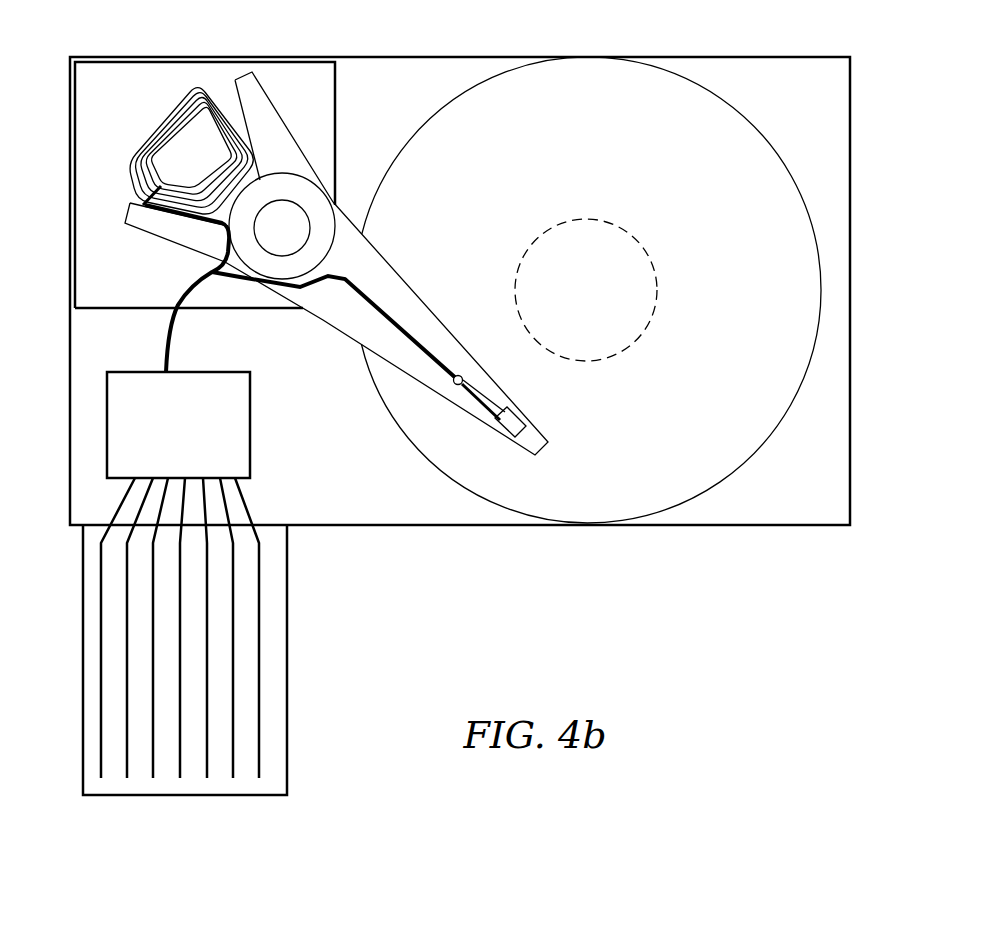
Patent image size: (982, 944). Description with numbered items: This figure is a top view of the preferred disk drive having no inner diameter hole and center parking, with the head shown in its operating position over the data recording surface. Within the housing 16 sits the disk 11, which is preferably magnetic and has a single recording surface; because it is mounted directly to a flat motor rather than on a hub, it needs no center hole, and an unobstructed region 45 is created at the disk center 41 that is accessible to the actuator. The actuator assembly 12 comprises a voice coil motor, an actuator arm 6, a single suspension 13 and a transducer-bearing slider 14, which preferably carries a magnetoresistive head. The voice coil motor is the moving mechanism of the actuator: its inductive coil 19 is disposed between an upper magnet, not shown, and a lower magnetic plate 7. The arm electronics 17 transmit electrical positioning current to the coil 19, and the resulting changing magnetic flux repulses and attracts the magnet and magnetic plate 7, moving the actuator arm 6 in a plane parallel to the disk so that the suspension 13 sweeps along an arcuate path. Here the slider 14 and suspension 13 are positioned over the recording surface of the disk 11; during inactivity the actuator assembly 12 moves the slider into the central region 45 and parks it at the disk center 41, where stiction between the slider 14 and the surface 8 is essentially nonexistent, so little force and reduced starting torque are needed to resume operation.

The housing 16 is at (800, 56).
The disk 11 is at (760, 138).
The surface 8 is at (636, 171).
The unobstructed region 45 is at (645, 279).
The disk center 41 is at (572, 279).
The actuator assembly 12 is at (320, 160).
The actuator arm 6 is at (276, 121).
The inductive coil 19 is at (167, 115).
The lower magnetic plate 7 is at (95, 255).
The suspension 13 is at (420, 303).
The transducer-bearing slider 14 is at (517, 411).
The arm electronics 17 is at (251, 432).